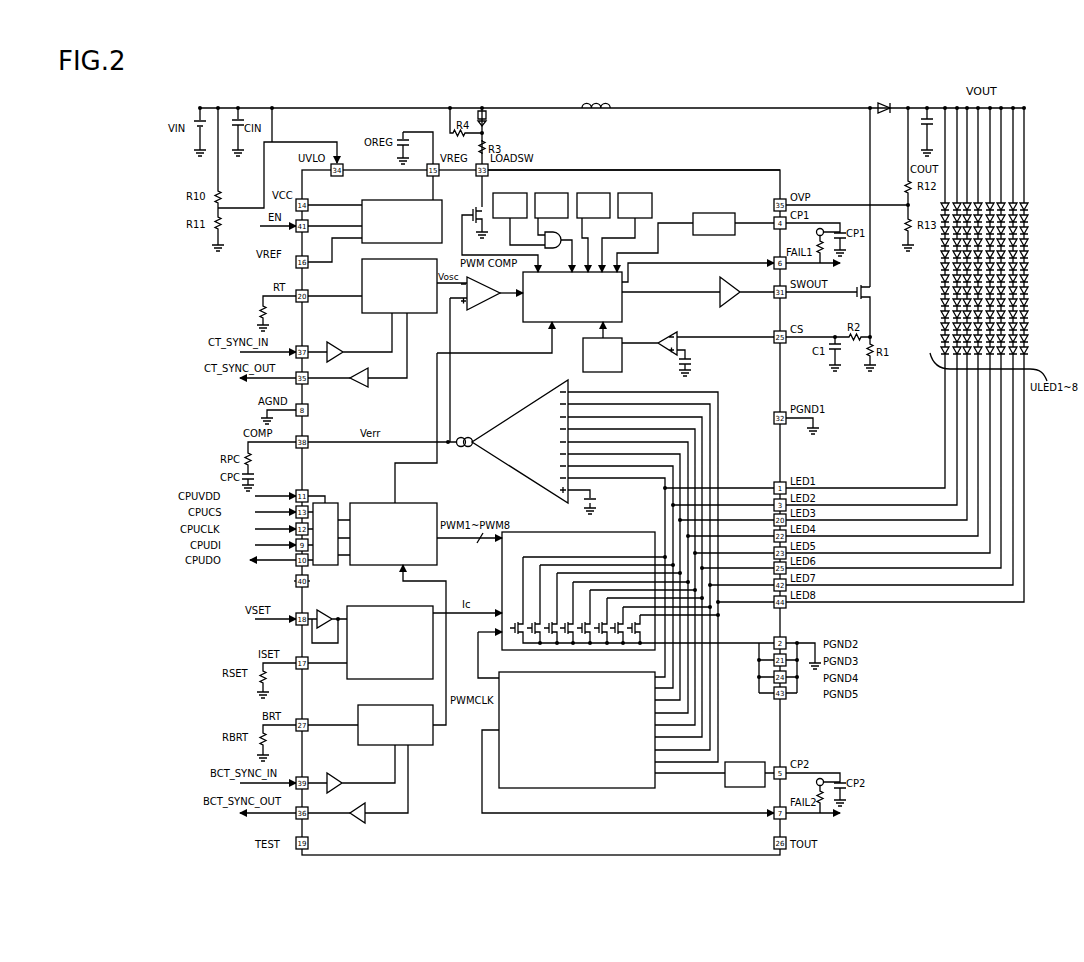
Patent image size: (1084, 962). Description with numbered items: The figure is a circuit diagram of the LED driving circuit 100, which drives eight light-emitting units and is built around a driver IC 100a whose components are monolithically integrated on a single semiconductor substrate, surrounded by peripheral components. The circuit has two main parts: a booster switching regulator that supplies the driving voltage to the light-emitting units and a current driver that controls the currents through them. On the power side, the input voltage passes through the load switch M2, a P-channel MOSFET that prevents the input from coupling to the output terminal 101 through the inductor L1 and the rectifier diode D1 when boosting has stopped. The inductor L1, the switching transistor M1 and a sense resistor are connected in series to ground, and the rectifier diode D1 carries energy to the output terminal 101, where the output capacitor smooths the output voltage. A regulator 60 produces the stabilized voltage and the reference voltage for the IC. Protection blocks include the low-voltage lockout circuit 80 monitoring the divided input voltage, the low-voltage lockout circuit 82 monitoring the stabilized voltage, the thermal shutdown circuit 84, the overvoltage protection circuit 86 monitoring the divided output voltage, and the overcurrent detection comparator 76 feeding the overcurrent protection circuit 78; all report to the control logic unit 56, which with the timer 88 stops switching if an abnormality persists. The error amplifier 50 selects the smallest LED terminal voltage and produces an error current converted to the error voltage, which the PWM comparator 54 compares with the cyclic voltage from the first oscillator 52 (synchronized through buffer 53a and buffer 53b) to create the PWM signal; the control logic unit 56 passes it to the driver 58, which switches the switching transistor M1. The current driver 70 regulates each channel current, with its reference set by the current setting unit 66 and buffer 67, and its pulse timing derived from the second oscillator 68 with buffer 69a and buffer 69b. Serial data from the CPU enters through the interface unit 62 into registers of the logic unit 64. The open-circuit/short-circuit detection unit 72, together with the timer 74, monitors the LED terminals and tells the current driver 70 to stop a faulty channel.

The error amplifier 50 is at (518, 473).
The first oscillator 52 is at (428, 314).
The buffer 53a is at (333, 349).
The buffer 53b is at (352, 390).
The PWM comparator 54 is at (491, 311).
The control logic unit 56 is at (533, 323).
The driver 58 is at (733, 308).
The regulator 60 is at (376, 200).
The interface unit 62 is at (328, 568).
The logic unit 64 is at (357, 568).
The current setting unit 66 is at (377, 608).
The buffer 67 is at (318, 613).
The second oscillator 68 is at (394, 706).
The buffer 69a is at (335, 778).
The buffer 69b is at (353, 826).
The current driver 70 is at (606, 532).
The open-circuit/short-circuit detection unit 72 is at (579, 672).
The timer 74 is at (742, 764).
The overcurrent detection comparator 76 is at (663, 357).
The overcurrent protection circuit 78 is at (598, 373).
The low-voltage lockout circuit 80 is at (508, 196).
The low-voltage lockout circuit 82 is at (543, 196).
The thermal shutdown circuit 84 is at (584, 196).
The overvoltage protection circuit 86 is at (625, 196).
The timer 88 is at (707, 236).
The LED driving circuit 100 is at (1030, 875).
The driver IC 100a is at (707, 171).
The output terminal 101 is at (928, 104).
The switching transistor M1 is at (842, 225).
The load switch M2 is at (484, 108).
The inductor L1 is at (598, 103).
The rectifier diode D1 is at (886, 103).